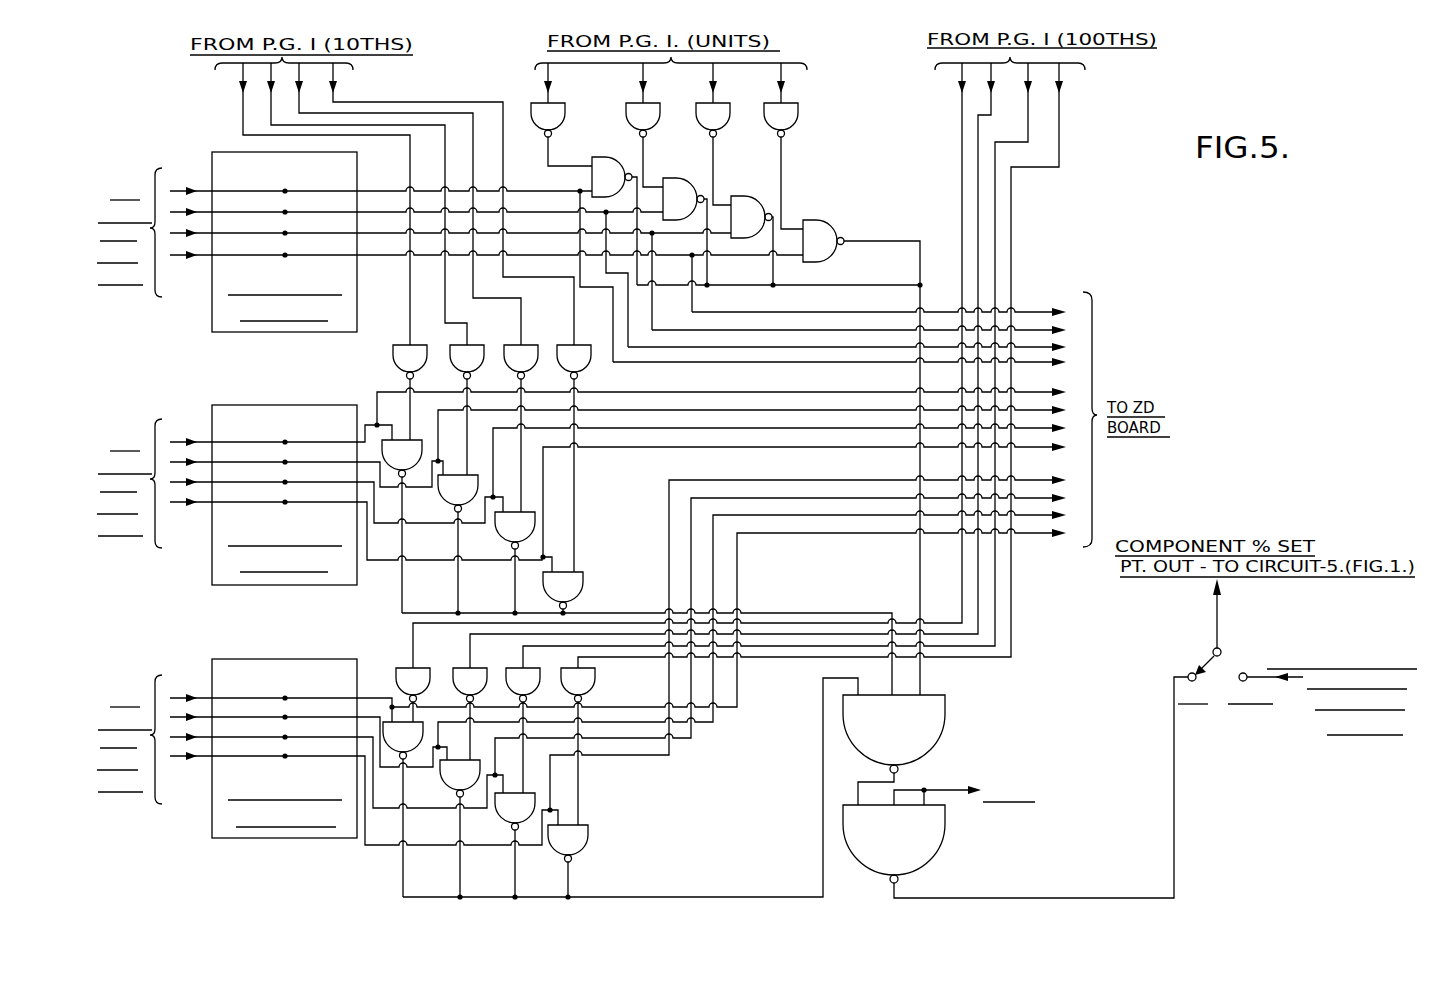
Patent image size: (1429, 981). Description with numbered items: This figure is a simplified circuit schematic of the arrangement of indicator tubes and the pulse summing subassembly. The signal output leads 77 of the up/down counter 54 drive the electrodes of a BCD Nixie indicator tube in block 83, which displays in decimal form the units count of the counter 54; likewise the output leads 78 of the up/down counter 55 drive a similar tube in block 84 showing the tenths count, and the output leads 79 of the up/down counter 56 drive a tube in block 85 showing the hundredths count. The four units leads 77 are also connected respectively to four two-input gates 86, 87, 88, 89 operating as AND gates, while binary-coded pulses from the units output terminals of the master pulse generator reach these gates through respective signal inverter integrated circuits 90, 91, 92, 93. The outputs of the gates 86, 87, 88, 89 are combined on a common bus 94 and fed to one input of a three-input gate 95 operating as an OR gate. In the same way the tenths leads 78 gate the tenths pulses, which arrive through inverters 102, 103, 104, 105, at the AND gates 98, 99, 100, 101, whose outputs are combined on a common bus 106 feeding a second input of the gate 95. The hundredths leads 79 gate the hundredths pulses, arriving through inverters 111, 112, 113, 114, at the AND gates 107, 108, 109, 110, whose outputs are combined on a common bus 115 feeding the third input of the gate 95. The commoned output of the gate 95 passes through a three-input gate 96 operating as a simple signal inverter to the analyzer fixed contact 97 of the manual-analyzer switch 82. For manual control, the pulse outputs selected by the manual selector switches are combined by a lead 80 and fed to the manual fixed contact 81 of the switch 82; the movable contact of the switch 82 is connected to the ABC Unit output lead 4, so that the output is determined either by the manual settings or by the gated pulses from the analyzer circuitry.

The ABC Unit output lead 4 is at (1219, 621).
The up/down counter 54 is at (135, 303).
The up/down counter 55 is at (135, 554).
The up/down counter 56 is at (135, 810).
The signal output leads 77 is at (179, 211).
The signal output leads 78 is at (179, 462).
The signal output leads 79 is at (179, 717).
The lead 80 is at (1276, 683).
The Man fixed contact 81 is at (1243, 672).
The manual-analyzer switch 82 is at (1205, 666).
The BCD Nixie indicator tube block 83 is at (212, 332).
The BCD Nixie indicator tube block 84 is at (212, 585).
The BCD Nixie indicator tube block 85 is at (212, 838).
The two-input gate 86 is at (608, 158).
The two-input gate 87 is at (680, 180).
The two-input gate 88 is at (748, 198).
The two-input gate 89 is at (820, 222).
The signal inverter integrated circuit 90 is at (552, 110).
The signal inverter integrated circuit 91 is at (648, 108).
The signal inverter integrated circuit 92 is at (718, 108).
The signal inverter integrated circuit 93 is at (796, 108).
The common bus 94 is at (726, 287).
The three-input gate 95 is at (942, 729).
The three-input gate operating as signal inverter 96 is at (936, 842).
The An fixed contact 97 is at (1188, 673).
The two-input gate 98 is at (404, 448).
The two-input gate 99 is at (452, 490).
The two-input gate 100 is at (503, 530).
The two-input gate 101 is at (585, 583).
The signal inverter integrated circuit 102 is at (397, 351).
The signal inverter integrated circuit 103 is at (452, 355).
The signal inverter integrated circuit 104 is at (507, 355).
The signal inverter integrated circuit 105 is at (560, 355).
The common bus 106 is at (626, 612).
The two-input gate 107 is at (396, 735).
The two-input gate 108 is at (450, 772).
The two-input gate 109 is at (498, 815).
The two-input gate 110 is at (582, 843).
The signal inverter integrated circuit 111 is at (400, 672).
The signal inverter integrated circuit 112 is at (455, 672).
The signal inverter integrated circuit 113 is at (510, 672).
The signal inverter integrated circuit 114 is at (592, 676).
The common bus 115 is at (686, 893).